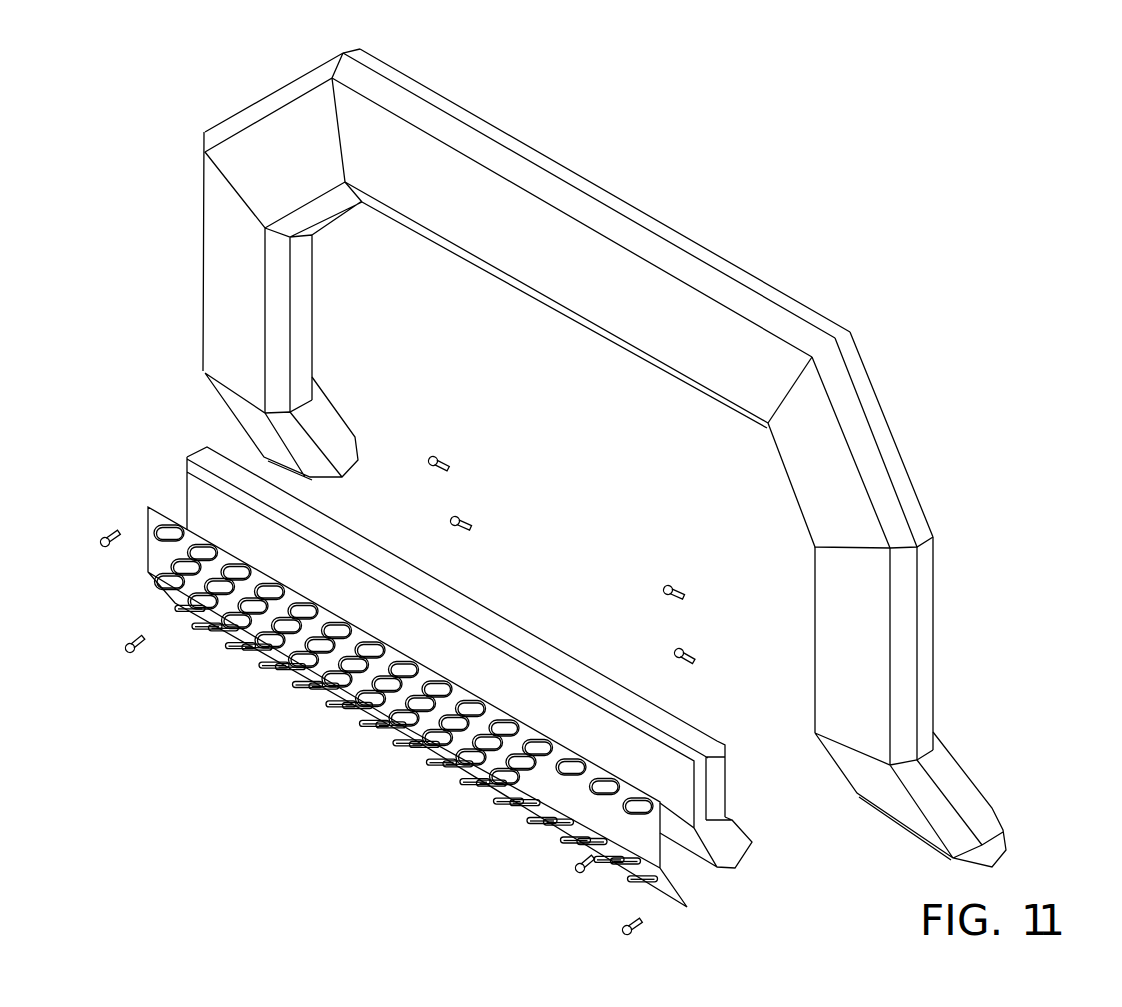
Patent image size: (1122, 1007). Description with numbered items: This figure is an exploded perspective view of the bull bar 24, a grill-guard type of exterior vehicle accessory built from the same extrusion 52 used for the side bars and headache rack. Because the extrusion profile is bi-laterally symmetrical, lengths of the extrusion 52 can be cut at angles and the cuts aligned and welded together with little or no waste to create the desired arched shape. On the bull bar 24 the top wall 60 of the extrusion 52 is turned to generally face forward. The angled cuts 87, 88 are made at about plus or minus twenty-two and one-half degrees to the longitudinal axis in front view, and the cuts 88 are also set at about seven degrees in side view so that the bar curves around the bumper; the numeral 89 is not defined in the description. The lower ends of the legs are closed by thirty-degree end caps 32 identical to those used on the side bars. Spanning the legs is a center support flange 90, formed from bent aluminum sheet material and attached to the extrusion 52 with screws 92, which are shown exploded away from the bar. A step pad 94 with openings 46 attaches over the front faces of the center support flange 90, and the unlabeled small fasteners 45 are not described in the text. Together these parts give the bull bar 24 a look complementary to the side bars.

The bull bar 24 is at (838, 262).
The extrusion 52 is at (288, 150).
The top wall 60 is at (676, 303).
The cut 87 is at (798, 382).
The cut 88 is at (857, 550).
The lower bend / vertical leg 89 is at (857, 747).
The end cap 32 is at (995, 845).
The center support flange 90 is at (442, 650).
The step pad 94 is at (253, 620).
The openings 46 is at (470, 705).
The screws 92 is at (470, 520).
The fasteners 45 is at (107, 548).